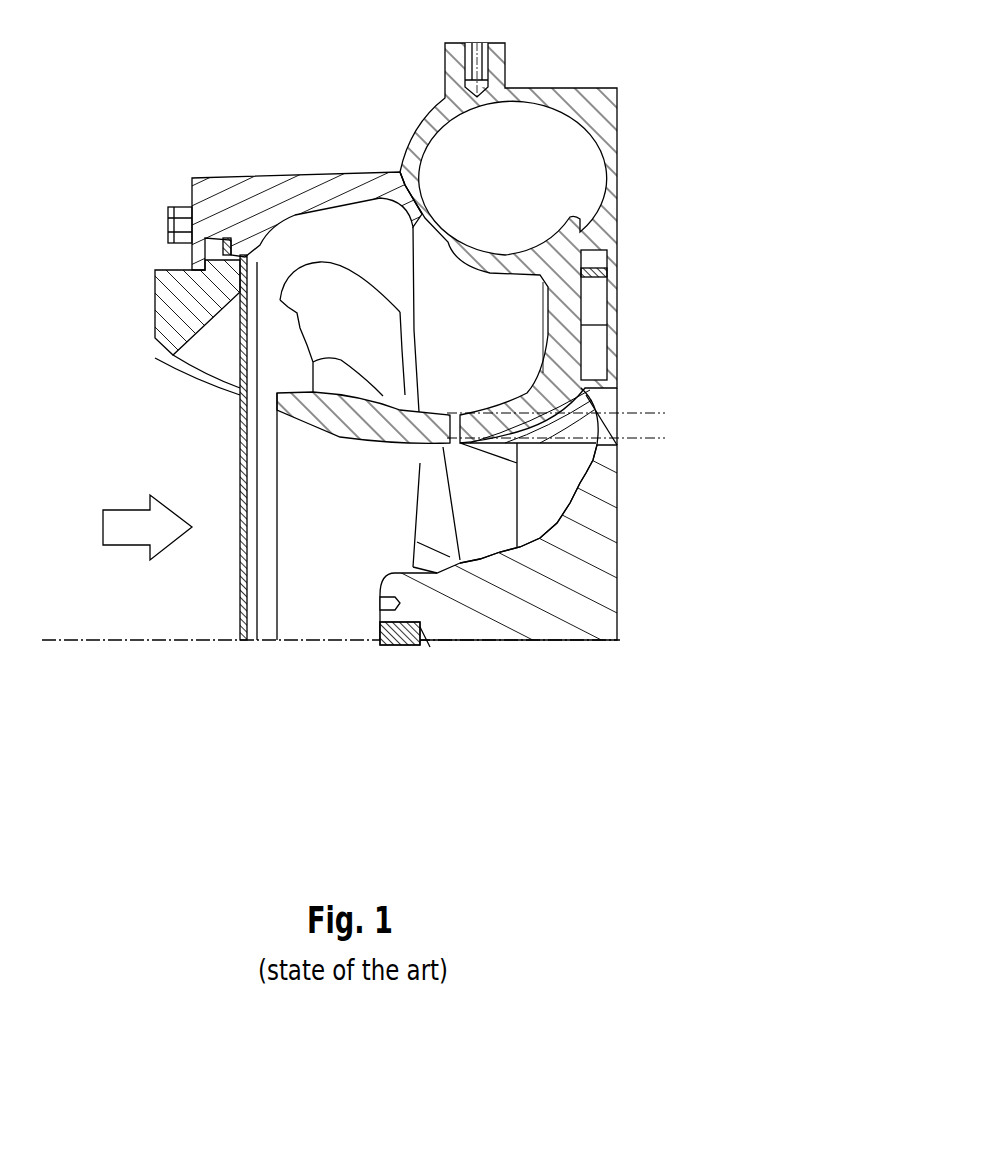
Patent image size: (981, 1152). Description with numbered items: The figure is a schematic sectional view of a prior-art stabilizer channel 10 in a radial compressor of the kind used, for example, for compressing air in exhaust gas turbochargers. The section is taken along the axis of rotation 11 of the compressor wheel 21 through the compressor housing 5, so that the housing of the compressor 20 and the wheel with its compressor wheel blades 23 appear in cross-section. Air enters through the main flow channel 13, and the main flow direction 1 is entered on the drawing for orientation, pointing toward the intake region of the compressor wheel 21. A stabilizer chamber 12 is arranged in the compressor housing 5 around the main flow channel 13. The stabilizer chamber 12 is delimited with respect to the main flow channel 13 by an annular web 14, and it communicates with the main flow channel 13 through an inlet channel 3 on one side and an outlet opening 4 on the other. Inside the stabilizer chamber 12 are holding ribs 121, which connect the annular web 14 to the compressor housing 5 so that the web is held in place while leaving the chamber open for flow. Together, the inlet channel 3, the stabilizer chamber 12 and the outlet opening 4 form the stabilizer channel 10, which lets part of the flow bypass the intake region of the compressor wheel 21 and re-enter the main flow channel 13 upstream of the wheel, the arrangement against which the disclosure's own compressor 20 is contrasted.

The main flow direction 1 is at (154, 538).
The inlet channel 3 is at (667, 413).
The outlet opening 4 is at (260, 402).
The compressor housing 5 is at (405, 167).
The stabilizer channel 10 is at (322, 236).
The axis of rotation 11 is at (303, 642).
The stabilizer chamber 12 is at (428, 309).
The main flow channel 13 is at (308, 536).
The annular web 14 is at (400, 413).
The compressor 20 is at (627, 34).
The compressor wheel 21 is at (550, 628).
The compressor wheel blades 23 is at (450, 557).
The holding ribs 121 is at (338, 280).